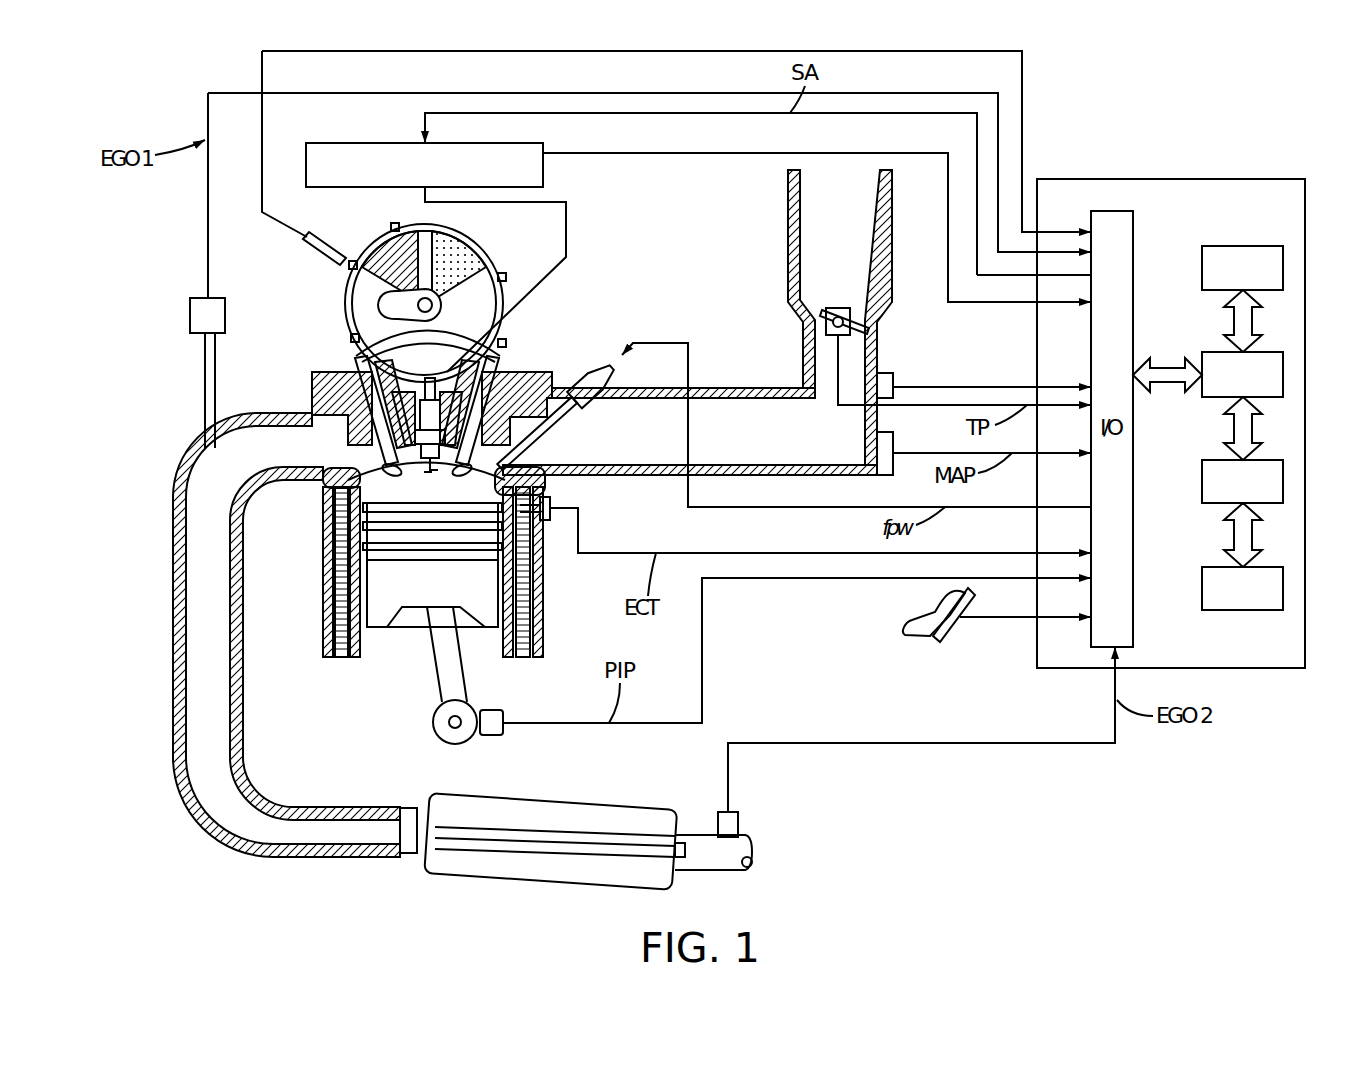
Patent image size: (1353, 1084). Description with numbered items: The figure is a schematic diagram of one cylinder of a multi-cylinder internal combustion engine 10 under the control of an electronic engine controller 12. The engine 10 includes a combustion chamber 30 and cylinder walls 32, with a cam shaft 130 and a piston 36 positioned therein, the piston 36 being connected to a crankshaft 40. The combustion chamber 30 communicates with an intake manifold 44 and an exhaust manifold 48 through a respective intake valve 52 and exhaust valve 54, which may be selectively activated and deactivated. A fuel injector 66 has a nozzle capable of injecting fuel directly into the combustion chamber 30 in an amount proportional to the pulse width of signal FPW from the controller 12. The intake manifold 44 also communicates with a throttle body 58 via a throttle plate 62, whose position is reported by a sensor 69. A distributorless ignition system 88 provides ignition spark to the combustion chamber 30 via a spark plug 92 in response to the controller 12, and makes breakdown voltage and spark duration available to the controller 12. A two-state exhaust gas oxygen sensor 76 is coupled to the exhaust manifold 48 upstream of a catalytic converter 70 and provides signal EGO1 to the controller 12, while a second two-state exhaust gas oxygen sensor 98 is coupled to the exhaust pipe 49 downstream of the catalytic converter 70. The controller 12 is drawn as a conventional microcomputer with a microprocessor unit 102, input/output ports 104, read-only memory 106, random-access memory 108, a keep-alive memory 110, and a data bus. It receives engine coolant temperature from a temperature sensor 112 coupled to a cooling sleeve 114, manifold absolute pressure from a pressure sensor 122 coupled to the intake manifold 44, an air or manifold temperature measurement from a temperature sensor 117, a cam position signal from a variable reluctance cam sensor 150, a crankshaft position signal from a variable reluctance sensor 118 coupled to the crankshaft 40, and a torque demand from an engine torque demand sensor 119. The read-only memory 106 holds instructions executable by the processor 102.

The internal combustion engine 10 is at (545, 308).
The electronic engine controller 12 is at (1163, 179).
The combustion chamber 30 is at (345, 520).
The cylinder walls 32 is at (360, 657).
The piston 36 is at (440, 590).
The crankshaft 40 is at (433, 722).
The intake manifold 44 is at (789, 449).
The exhaust manifold 48 is at (200, 485).
The exhaust pipe 49 is at (720, 862).
The intake valve 52 is at (522, 362).
The exhaust valve 54 is at (347, 365).
The throttle body 58 is at (800, 372).
The throttle plate 62 is at (820, 300).
The fuel injector 66 is at (592, 402).
The throttle plate position sensor 69 is at (858, 352).
The catalytic converter 70 is at (527, 793).
The two-state exhaust gas oxygen sensor 76 is at (190, 315).
The distributorless ignition system 88 is at (332, 143).
The spark plug 92 is at (428, 395).
The two-state exhaust gas oxygen sensor 98 is at (715, 808).
The microprocessor unit 102 is at (1208, 352).
The input/output ports 104 is at (1133, 243).
The read-only memory 106 is at (1243, 246).
The random-access memory 108 is at (1208, 460).
The keep alive memory 110 is at (1208, 567).
The temperature sensor 112 is at (555, 500).
The cooling sleeve 114 is at (328, 667).
The temperature sensor 117 is at (898, 385).
The variable reluctance sensor 118 is at (495, 710).
The engine torque demand sensor 119 is at (965, 648).
The pressure sensor 122 is at (893, 448).
The cam shaft 130 is at (385, 305).
The variable reluctance cam sensor 150 is at (305, 247).